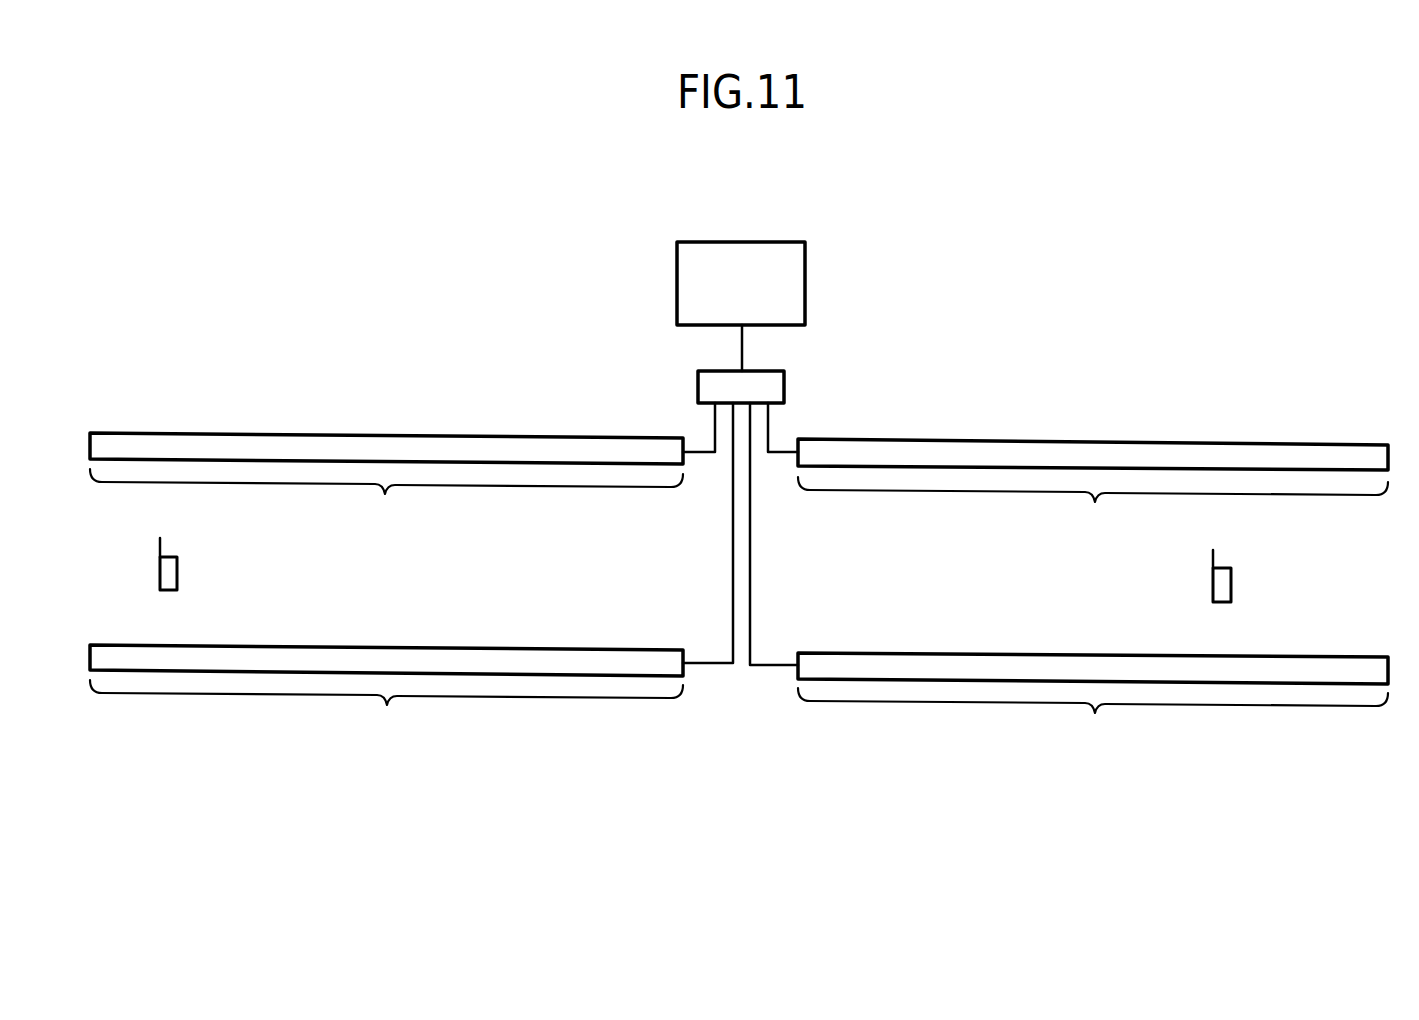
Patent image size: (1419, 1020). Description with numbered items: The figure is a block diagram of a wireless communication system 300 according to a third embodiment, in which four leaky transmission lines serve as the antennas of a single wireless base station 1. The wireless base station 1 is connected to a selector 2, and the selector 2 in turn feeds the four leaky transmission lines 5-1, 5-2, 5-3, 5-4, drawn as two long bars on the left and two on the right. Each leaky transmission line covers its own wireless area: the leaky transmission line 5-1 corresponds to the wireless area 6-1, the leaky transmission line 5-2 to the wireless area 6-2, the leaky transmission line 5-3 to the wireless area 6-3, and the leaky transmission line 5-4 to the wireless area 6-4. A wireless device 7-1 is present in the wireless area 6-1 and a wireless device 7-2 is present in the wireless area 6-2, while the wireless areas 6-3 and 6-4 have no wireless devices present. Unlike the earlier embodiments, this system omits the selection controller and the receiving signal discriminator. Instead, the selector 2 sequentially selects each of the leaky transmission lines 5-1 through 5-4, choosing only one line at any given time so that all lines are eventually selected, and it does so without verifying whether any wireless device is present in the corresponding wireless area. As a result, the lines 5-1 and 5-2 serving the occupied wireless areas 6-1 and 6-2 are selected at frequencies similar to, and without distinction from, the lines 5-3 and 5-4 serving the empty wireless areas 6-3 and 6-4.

The wireless base station 1 is at (805, 255).
The selector 2 is at (698, 388).
The wireless communication system 300 is at (1042, 348).
The leaky transmission line 5-1 is at (273, 433).
The leaky transmission line 5-2 is at (1183, 445).
The leaky transmission line 5-3 is at (500, 648).
The leaky transmission line 5-4 is at (860, 652).
The wireless area 6-1 is at (386, 504).
The wireless area 6-2 is at (1093, 512).
The wireless area 6-3 is at (386, 717).
The wireless area 6-4 is at (1093, 725).
The wireless device 7-1 is at (177, 573).
The wireless device 7-2 is at (1231, 585).